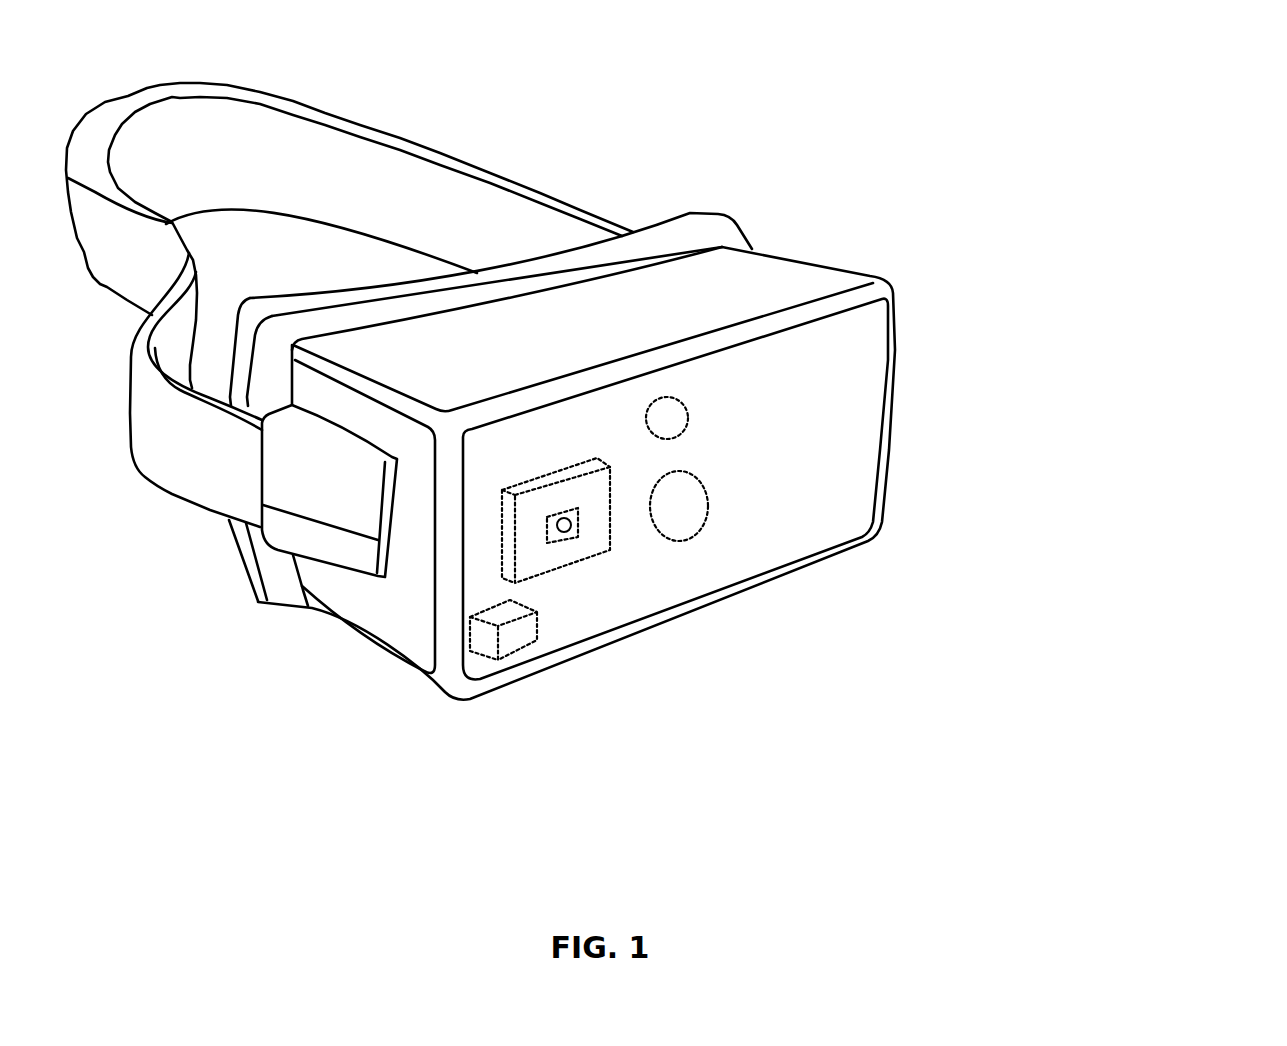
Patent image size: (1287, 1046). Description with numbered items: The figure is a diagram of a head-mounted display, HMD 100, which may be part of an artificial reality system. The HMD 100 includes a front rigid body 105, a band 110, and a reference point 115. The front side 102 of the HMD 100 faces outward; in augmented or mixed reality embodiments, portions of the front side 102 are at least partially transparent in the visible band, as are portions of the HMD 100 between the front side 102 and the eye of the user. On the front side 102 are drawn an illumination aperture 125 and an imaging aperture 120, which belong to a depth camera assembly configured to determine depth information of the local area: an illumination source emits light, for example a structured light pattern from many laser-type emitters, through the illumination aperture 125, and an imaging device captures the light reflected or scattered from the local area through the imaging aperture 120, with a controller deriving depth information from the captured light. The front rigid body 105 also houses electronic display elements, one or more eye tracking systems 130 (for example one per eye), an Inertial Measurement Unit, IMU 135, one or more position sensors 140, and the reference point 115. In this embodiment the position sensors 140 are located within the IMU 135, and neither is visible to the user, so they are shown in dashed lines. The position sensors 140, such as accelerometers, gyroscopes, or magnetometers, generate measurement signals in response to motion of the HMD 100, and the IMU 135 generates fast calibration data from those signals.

The head-mounted display (HMD) 100 is at (993, 63).
The band 110 is at (492, 170).
The front rigid body 105 is at (885, 283).
The front side 102 is at (790, 470).
The illumination aperture 125 is at (687, 408).
The imaging aperture 120 is at (707, 509).
The position sensors 140 is at (548, 540).
The Inertial Measurement Unit (IMU) 135 is at (610, 538).
The reference point 115 is at (566, 532).
The eye tracking system 130 is at (512, 636).